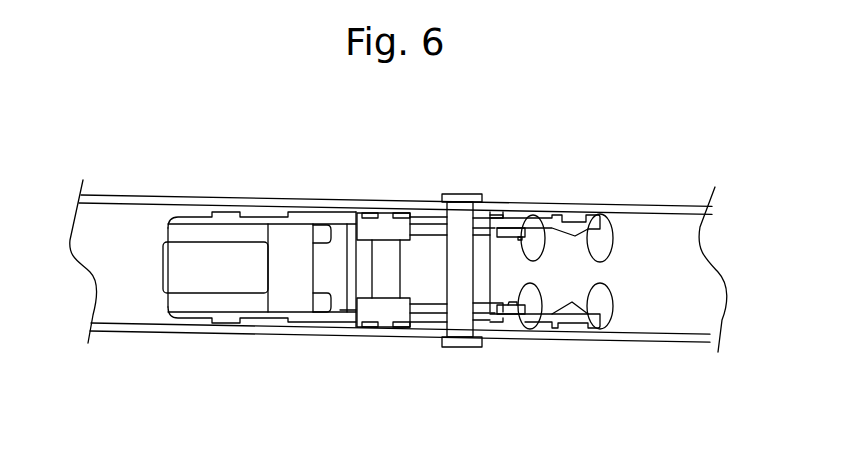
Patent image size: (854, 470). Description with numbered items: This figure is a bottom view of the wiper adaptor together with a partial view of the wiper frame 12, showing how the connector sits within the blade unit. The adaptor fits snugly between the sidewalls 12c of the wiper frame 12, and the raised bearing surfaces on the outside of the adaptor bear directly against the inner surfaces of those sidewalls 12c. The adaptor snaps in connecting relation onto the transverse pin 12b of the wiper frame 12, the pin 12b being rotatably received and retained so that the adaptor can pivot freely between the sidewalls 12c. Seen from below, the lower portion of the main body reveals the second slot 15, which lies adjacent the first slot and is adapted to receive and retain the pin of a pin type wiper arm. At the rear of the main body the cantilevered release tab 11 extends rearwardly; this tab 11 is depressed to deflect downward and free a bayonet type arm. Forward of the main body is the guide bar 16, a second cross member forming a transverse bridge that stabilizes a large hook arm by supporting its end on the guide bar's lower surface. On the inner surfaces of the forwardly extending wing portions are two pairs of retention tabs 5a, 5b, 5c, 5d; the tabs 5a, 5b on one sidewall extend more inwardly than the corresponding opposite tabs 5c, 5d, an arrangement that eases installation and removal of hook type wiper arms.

The wiper frame 12 is at (398, 254).
The transverse pin 12b is at (462, 303).
The sidewalls 12c is at (287, 200).
The cantilevered release tab 11 is at (228, 255).
The second slot 15 is at (383, 283).
The guide bar 16 is at (298, 272).
The retention tab 5a is at (601, 214).
The retention tab 5b is at (533, 215).
The retention tab 5c is at (605, 328).
The retention tab 5d is at (533, 328).